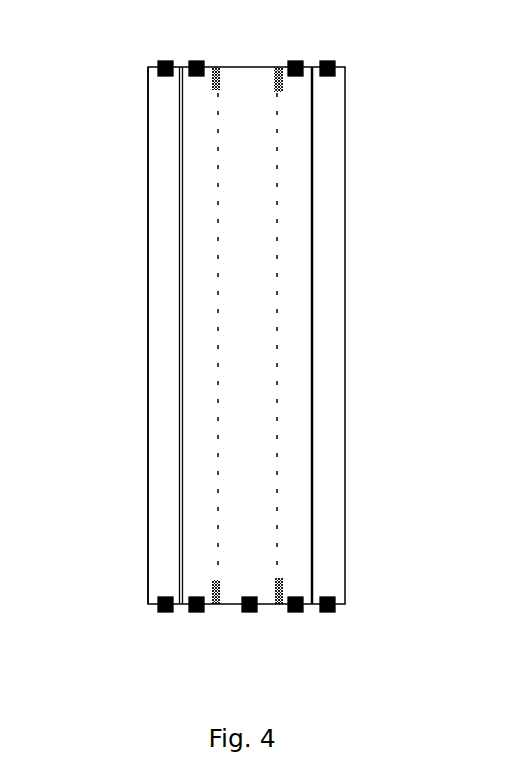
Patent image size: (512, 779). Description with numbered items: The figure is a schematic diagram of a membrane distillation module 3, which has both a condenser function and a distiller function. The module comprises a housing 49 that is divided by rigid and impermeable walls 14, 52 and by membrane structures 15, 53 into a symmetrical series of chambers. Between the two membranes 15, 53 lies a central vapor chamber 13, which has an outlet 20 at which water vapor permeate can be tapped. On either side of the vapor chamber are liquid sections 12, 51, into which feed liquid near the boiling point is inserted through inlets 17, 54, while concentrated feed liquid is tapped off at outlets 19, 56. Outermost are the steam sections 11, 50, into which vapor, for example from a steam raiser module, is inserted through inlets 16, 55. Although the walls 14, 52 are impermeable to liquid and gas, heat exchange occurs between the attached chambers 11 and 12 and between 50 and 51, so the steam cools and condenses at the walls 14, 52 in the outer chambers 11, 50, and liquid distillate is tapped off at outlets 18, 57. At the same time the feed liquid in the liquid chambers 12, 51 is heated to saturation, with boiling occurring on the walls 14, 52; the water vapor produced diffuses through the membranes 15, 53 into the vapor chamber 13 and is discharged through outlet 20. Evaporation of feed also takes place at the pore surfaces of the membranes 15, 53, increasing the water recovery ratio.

The membrane distillation module 3 is at (70, 96).
The outer steam section 11 is at (157, 505).
The liquid section 12 is at (193, 530).
The vapor chamber 13 is at (265, 548).
The rigid and impermeable wall 14 is at (180, 370).
The membrane structure 15 is at (218, 193).
The inlet 16 is at (162, 61).
The inlet 17 is at (198, 61).
The outlet 18 is at (158, 612).
The outlet 19 is at (195, 612).
The outlet 20 is at (245, 612).
The housing 49 is at (149, 408).
The outer steam section 50 is at (330, 418).
The liquid section 51 is at (300, 347).
The rigid and impermeable wall 52 is at (312, 492).
The membrane structure 53 is at (277, 147).
The inlet 54 is at (295, 61).
The inlet 55 is at (328, 61).
The outlet 56 is at (293, 612).
The outlet 57 is at (327, 612).